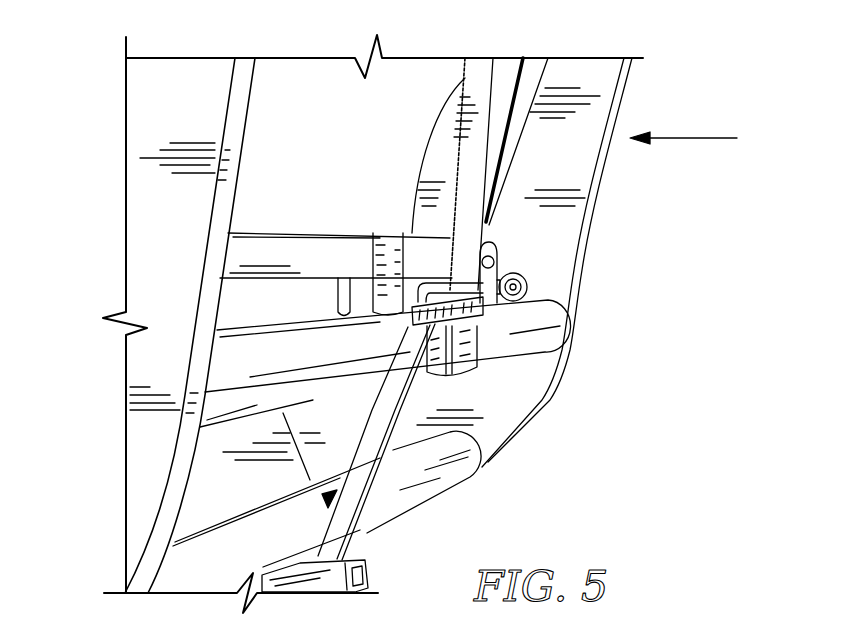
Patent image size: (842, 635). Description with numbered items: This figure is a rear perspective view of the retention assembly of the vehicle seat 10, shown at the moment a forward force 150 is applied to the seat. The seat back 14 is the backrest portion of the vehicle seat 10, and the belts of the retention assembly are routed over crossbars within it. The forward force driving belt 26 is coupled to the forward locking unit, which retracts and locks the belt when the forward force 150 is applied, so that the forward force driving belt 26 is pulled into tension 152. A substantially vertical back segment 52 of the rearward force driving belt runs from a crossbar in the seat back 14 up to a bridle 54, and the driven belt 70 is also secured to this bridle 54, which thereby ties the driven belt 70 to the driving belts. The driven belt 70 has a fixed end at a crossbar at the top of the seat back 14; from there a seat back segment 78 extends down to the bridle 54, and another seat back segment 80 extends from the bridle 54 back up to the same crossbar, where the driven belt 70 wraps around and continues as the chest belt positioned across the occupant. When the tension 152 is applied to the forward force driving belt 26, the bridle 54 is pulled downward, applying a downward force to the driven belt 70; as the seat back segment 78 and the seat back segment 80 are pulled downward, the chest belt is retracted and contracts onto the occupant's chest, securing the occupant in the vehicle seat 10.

The vehicle seat 10 is at (452, 43).
The seat back 14 is at (604, 66).
The forward force driving belt 26 is at (377, 477).
The back segment 52 is at (495, 358).
The bridle 54 is at (378, 300).
The driven belt 70 is at (477, 178).
The seat back segment 78 is at (523, 140).
The seat back segment 80 is at (470, 118).
The forward force 150 is at (695, 138).
The tension 152 is at (263, 500).